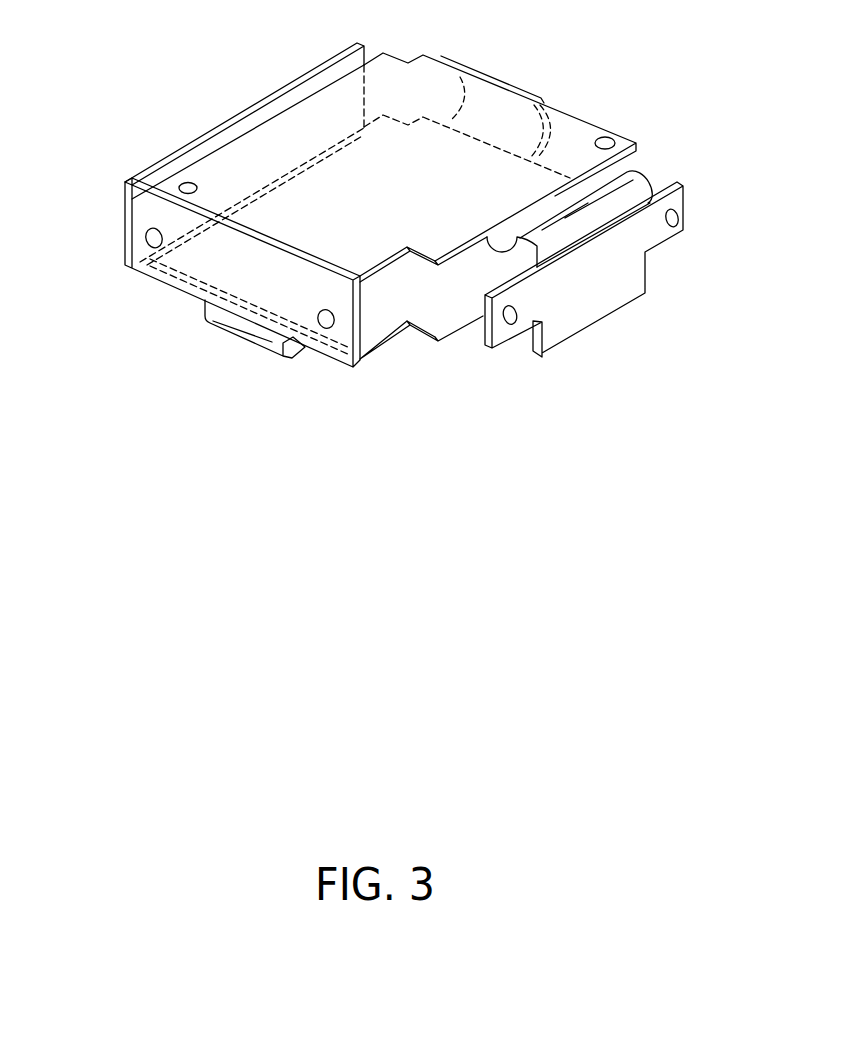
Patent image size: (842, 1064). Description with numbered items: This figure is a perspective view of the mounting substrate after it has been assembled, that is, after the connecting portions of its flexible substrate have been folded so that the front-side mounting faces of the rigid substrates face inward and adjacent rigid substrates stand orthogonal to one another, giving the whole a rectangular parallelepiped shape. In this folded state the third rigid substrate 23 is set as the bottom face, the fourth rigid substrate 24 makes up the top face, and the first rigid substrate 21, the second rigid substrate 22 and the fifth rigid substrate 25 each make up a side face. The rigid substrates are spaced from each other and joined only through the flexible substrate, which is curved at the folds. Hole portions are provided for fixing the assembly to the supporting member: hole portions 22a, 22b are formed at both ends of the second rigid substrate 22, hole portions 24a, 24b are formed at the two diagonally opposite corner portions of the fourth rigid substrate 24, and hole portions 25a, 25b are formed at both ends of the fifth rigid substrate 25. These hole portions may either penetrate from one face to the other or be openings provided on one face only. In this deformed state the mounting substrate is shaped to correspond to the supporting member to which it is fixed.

The first rigid substrate 21 is at (268, 103).
The second rigid substrate 22 is at (197, 262).
The hole portion 22a is at (322, 328).
The hole portion 22b is at (147, 238).
The third rigid substrate 23 is at (427, 308).
The fourth rigid substrate 24 is at (567, 133).
The hole portion 24a is at (607, 142).
The hole portion 24b is at (188, 185).
The fifth rigid substrate 25 is at (588, 314).
The hole portion 25a is at (681, 222).
The hole portion 25b is at (515, 322).